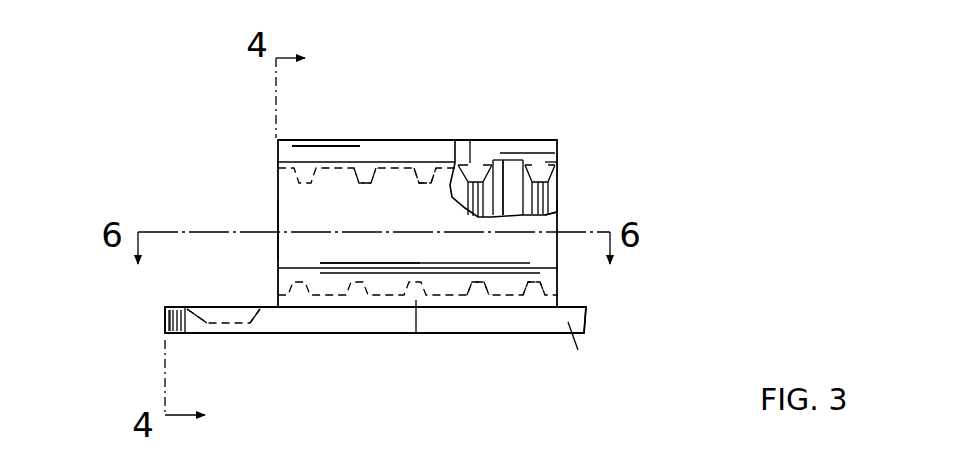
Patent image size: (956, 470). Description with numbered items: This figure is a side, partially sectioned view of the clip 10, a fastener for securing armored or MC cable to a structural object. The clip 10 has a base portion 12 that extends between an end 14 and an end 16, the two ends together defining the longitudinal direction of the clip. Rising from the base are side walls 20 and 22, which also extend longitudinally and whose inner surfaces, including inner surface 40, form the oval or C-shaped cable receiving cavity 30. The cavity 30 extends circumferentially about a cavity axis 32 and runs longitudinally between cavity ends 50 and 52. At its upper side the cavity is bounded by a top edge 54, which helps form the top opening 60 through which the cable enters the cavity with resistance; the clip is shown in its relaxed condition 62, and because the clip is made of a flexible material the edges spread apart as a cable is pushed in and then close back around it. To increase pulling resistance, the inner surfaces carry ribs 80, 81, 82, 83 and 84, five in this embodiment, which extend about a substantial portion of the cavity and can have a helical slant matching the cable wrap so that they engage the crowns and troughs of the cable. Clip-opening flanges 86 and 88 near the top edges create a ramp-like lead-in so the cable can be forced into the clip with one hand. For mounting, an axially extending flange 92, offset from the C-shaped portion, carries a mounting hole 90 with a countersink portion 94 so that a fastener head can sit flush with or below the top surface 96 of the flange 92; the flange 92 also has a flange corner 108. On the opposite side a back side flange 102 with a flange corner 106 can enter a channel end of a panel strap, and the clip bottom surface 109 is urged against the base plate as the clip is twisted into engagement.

The clip 10 is at (580, 192).
The base portion 12 is at (281, 336).
The end 14 is at (165, 313).
The end 16 is at (586, 316).
The side wall 20 is at (557, 188).
The side wall 22 is at (290, 208).
The cable receiving cavity 30 is at (540, 151).
The cavity axis 32 is at (328, 232).
The inner surface 40 is at (502, 203).
The cavity end 50 is at (277, 183).
The cavity end 52 is at (557, 221).
The top edge 54 is at (513, 168).
The top opening 60 is at (467, 140).
The relaxed condition 62 is at (262, 130).
The rib 80 is at (305, 178).
The rib 81 is at (366, 172).
The rib 82 is at (427, 172).
The rib 83 is at (479, 172).
The rib 84 is at (565, 148).
The clip-opening flange 86 is at (524, 150).
The clip-opening flange 88 is at (345, 148).
The mounting hole 90 is at (226, 330).
The axially extending flange 92 is at (176, 292).
The countersink portion 94 is at (210, 322).
The top surface 96 is at (183, 312).
The back side flange 102 is at (570, 333).
The flange corner 106 is at (586, 333).
The flange corner 108 is at (163, 328).
The clip bottom surface 109 is at (478, 334).